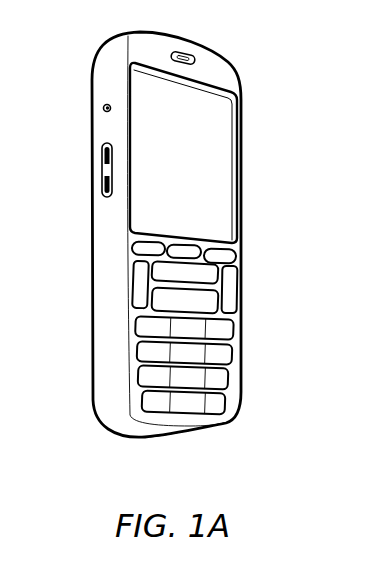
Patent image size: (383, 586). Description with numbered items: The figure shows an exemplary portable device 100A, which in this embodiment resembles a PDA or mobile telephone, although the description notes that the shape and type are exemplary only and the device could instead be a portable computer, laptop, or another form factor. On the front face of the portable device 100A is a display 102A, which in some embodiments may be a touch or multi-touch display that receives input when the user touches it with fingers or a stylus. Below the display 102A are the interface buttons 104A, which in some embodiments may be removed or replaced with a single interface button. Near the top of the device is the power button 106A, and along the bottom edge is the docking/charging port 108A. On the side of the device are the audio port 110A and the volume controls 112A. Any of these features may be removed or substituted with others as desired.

The portable device 100A is at (269, 58).
The display 102A is at (235, 219).
The interface buttons 104A is at (233, 377).
The power button 106A is at (185, 43).
The docking/charging port 108A is at (180, 431).
The audio port 110A is at (101, 107).
The volume controls 112A is at (104, 168).